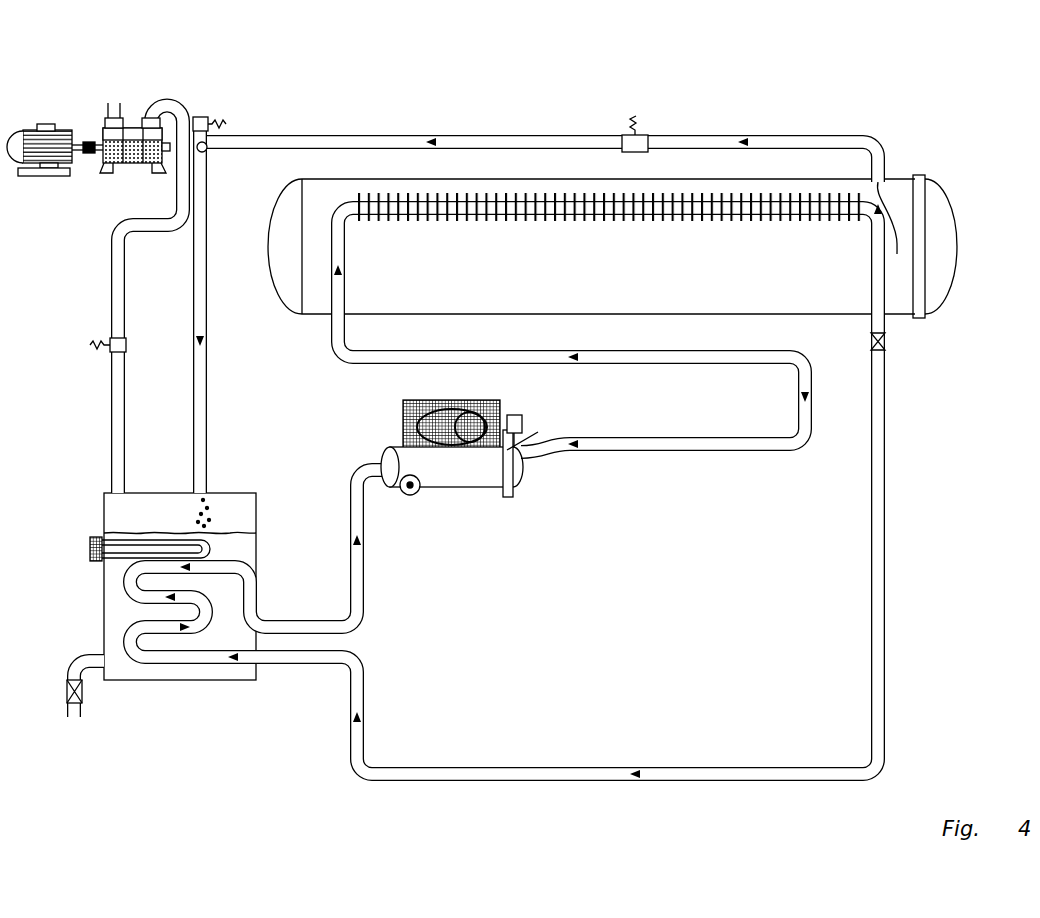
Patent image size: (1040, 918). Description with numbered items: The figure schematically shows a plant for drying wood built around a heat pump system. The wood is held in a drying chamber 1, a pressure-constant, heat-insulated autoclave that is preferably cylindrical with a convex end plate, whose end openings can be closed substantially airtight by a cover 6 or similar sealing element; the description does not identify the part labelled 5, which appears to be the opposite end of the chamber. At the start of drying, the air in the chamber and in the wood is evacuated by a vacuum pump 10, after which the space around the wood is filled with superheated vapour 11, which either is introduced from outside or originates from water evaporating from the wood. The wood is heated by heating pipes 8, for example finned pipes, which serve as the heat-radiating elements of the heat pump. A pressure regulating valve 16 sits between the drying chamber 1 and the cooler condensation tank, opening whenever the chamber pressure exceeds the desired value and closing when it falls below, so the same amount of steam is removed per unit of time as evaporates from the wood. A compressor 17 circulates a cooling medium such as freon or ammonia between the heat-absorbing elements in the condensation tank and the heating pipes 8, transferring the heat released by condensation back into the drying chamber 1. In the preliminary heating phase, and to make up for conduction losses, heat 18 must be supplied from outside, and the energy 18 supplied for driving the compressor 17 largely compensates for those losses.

The drying chamber 1 is at (447, 252).
The vessel end cap 5 is at (272, 250).
The cover 6 is at (942, 250).
The heating pipes 8 is at (560, 200).
The vacuum pump 10 is at (55, 135).
The superheated vapour 11 is at (668, 190).
The pressure regulating valve 16 is at (628, 136).
The compressor 17 is at (397, 452).
The heat from outside 18 is at (89, 546).